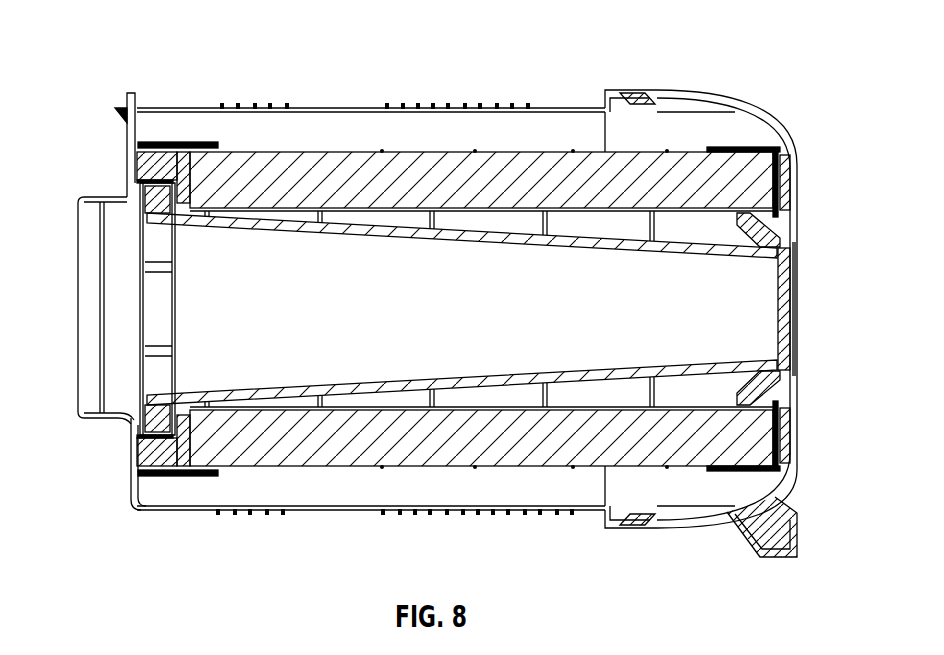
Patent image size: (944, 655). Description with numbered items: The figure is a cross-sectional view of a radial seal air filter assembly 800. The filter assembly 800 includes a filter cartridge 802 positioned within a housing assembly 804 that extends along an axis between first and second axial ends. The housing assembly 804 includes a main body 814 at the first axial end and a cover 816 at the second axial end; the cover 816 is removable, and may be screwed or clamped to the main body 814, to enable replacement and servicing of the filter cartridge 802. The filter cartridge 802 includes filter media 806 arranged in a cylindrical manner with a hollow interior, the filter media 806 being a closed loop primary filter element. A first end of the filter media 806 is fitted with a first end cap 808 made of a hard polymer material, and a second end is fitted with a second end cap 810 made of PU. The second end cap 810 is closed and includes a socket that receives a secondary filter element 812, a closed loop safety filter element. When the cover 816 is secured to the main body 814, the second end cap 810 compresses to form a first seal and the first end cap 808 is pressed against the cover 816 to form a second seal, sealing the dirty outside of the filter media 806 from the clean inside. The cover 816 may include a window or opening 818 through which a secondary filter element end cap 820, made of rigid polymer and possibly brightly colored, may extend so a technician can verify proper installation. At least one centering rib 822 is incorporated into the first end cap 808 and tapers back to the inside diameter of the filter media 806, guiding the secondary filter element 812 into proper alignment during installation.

The radial seal air filter assembly 800 is at (149, 39).
The filter cartridge 802 is at (703, 139).
The housing assembly 804 is at (578, 94).
The filter media 806 is at (631, 177).
The first end cap 808 is at (784, 167).
The second end cap 810 is at (149, 165).
The secondary filter element 812 is at (246, 393).
The main body 814 is at (320, 107).
The cover 816 is at (781, 485).
The window or opening 818 is at (797, 312).
The secondary filter element end cap 820 is at (787, 282).
The centering rib 822 is at (768, 228).